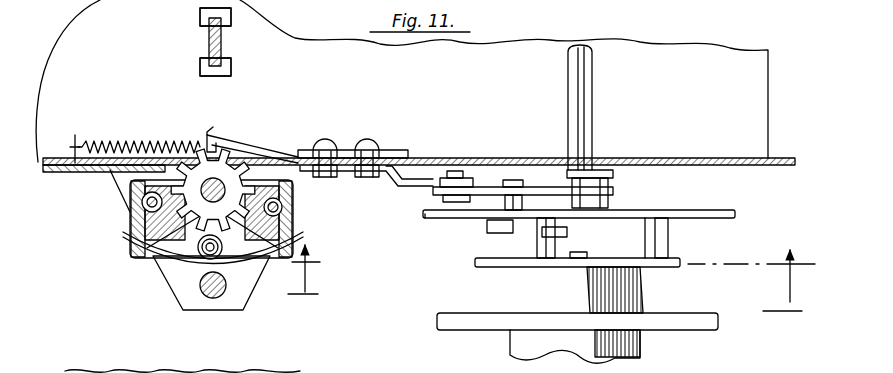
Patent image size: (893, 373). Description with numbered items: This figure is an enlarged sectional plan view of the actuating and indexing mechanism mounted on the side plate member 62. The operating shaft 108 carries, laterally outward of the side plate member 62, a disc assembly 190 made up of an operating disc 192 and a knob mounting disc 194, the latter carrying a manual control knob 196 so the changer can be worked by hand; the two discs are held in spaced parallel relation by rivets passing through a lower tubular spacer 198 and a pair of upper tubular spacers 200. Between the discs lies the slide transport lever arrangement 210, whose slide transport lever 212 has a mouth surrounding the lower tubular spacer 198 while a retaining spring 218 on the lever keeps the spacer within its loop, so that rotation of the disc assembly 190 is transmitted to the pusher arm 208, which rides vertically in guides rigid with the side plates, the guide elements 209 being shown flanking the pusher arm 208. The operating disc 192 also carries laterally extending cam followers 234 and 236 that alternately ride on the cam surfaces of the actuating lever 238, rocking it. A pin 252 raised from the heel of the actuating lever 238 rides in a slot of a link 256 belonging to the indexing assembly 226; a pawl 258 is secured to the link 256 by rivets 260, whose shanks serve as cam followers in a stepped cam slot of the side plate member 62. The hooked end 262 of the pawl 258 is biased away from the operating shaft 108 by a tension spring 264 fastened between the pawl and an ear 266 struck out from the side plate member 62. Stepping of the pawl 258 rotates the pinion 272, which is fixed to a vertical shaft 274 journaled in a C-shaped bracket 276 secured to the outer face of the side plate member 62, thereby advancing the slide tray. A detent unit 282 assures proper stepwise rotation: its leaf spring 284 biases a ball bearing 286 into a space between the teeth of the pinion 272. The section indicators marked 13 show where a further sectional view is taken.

The side plate member 62 is at (700, 163).
The operating shaft 108 is at (594, 72).
The pusher arm 208 is at (200, 48).
The clamp flanges 209 is at (200, 18).
The ear 266 is at (74, 143).
The tension spring 264 is at (128, 140).
The hooked end 262 is at (212, 133).
The vertical shaft 274 is at (128, 172).
The pinion 272 is at (130, 212).
The detent unit 282 is at (165, 263).
The leaf spring 284 is at (205, 258).
The ball bearing 286 is at (203, 262).
The C-shaped bracket 276 is at (257, 302).
The section line 13 is at (551, 278).
The rivets 260 is at (367, 178).
The pawl 258 is at (298, 157).
The link 256 is at (402, 176).
The indexing assembly 226 is at (413, 178).
The pin 252 is at (464, 176).
The cam follower 236 is at (514, 182).
The actuating lever 238 is at (535, 190).
The cam follower 234 is at (613, 204).
The operating disc 192 is at (726, 212).
The slide transport lever arrangement 210 is at (424, 229).
The retaining spring 218 is at (500, 236).
The slide transport lever 212 is at (586, 233).
The lower tubular spacer 198 is at (545, 253).
The upper tubular spacers 200 is at (669, 238).
The disc assembly 190 is at (479, 271).
The knob mounting disc 194 is at (638, 266).
The manual control knob 196 is at (643, 352).